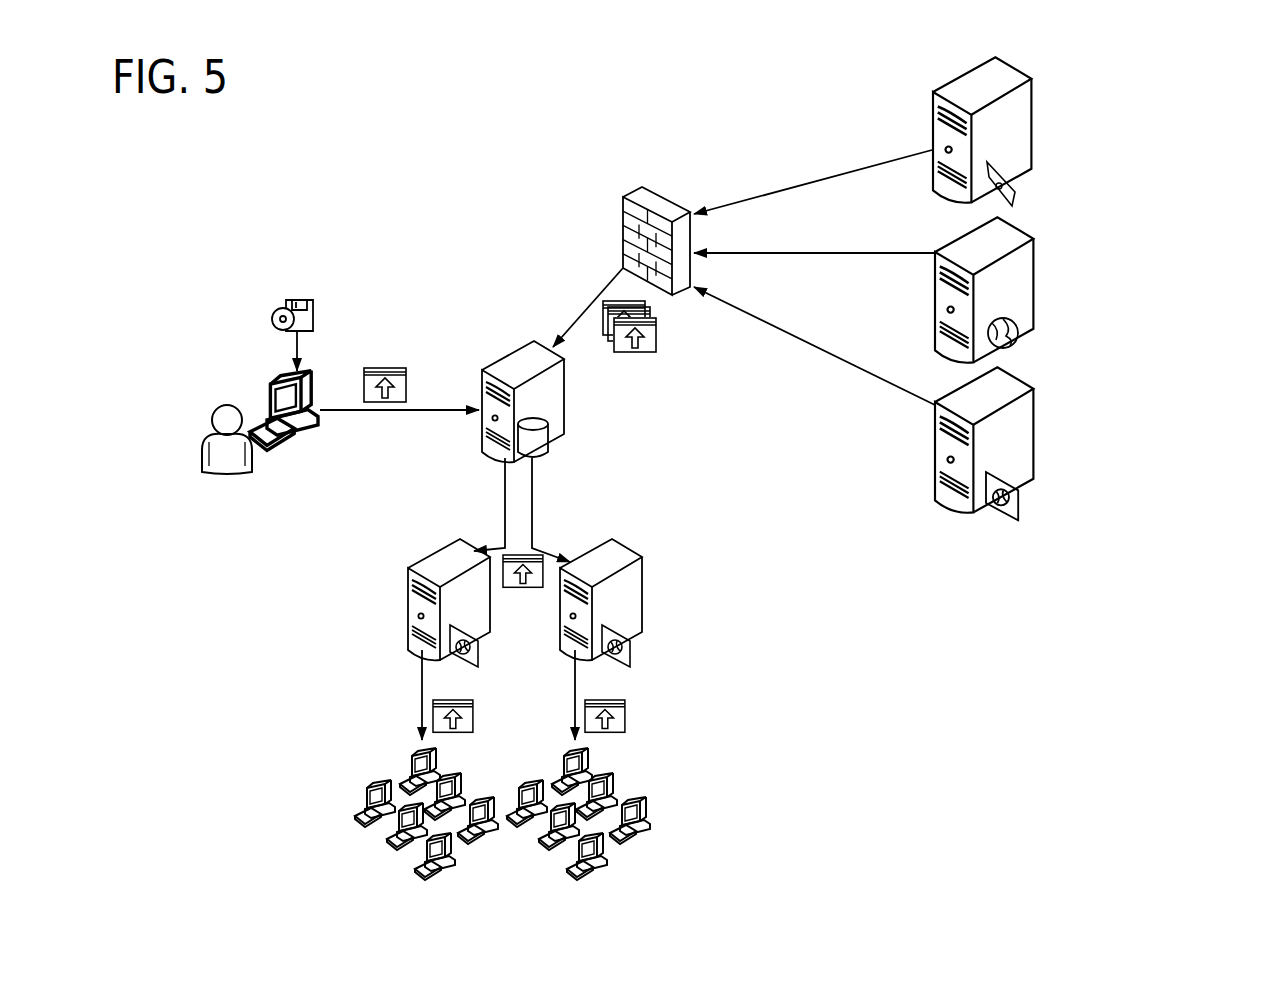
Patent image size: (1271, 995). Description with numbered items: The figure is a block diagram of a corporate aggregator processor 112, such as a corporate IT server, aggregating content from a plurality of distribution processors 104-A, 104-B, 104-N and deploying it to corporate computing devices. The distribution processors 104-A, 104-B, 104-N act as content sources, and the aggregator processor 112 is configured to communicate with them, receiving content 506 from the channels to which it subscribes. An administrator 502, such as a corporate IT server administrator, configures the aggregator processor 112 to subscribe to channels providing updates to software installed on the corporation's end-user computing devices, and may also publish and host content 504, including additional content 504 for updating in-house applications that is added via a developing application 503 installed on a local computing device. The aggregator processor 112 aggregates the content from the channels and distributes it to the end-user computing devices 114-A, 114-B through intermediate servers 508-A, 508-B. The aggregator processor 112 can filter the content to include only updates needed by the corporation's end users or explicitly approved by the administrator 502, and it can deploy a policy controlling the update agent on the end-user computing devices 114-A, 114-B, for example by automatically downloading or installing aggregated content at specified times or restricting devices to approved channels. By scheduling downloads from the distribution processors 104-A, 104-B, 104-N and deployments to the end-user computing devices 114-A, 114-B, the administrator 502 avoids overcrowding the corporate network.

The distribution processor 104-A is at (1033, 73).
The distribution processor 104-B is at (1035, 233).
The distribution processor 104-N is at (1035, 385).
The aggregator processor 112 is at (507, 348).
The administrator 502 is at (208, 414).
The developing application 503 is at (297, 295).
The content 504 is at (387, 368).
The content 506 is at (660, 342).
The intermediate server 508-A is at (420, 558).
The intermediate server 508-B is at (642, 556).
The end-user computing devices 114-A is at (416, 814).
The end-user computing devices 114-B is at (592, 814).